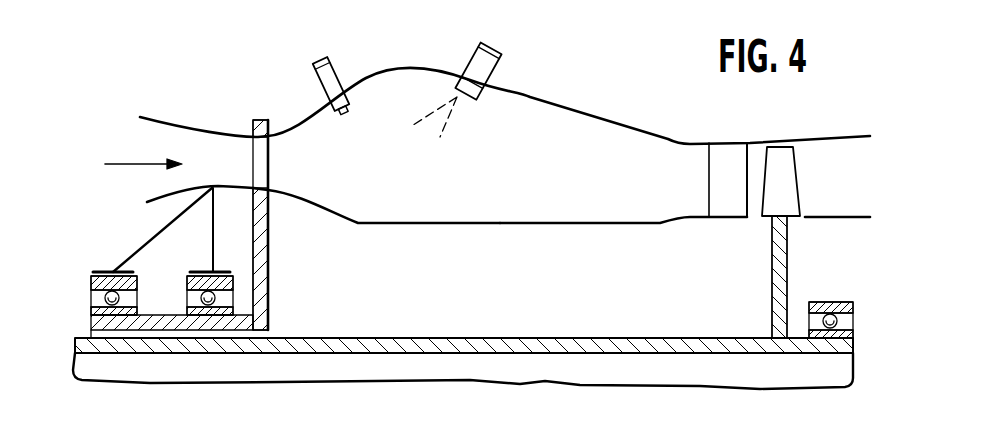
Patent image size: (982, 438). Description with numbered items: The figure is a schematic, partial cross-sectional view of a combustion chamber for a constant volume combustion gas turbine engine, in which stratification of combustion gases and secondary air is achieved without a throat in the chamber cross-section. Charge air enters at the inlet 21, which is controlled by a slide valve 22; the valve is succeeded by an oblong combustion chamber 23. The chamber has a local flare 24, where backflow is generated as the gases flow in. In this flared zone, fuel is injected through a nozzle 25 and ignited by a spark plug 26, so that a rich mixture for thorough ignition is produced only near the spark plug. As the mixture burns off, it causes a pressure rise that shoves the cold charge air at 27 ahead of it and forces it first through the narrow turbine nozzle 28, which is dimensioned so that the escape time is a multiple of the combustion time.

The inlet 21 is at (143, 153).
The slide valve 22 is at (253, 124).
The oblong combustion chamber 23 is at (497, 176).
The local flare 24 is at (380, 203).
The nozzle 25 is at (482, 64).
The spark plug 26 is at (332, 80).
The cold charge air 27 is at (632, 208).
The turbine nozzle 28 is at (734, 140).